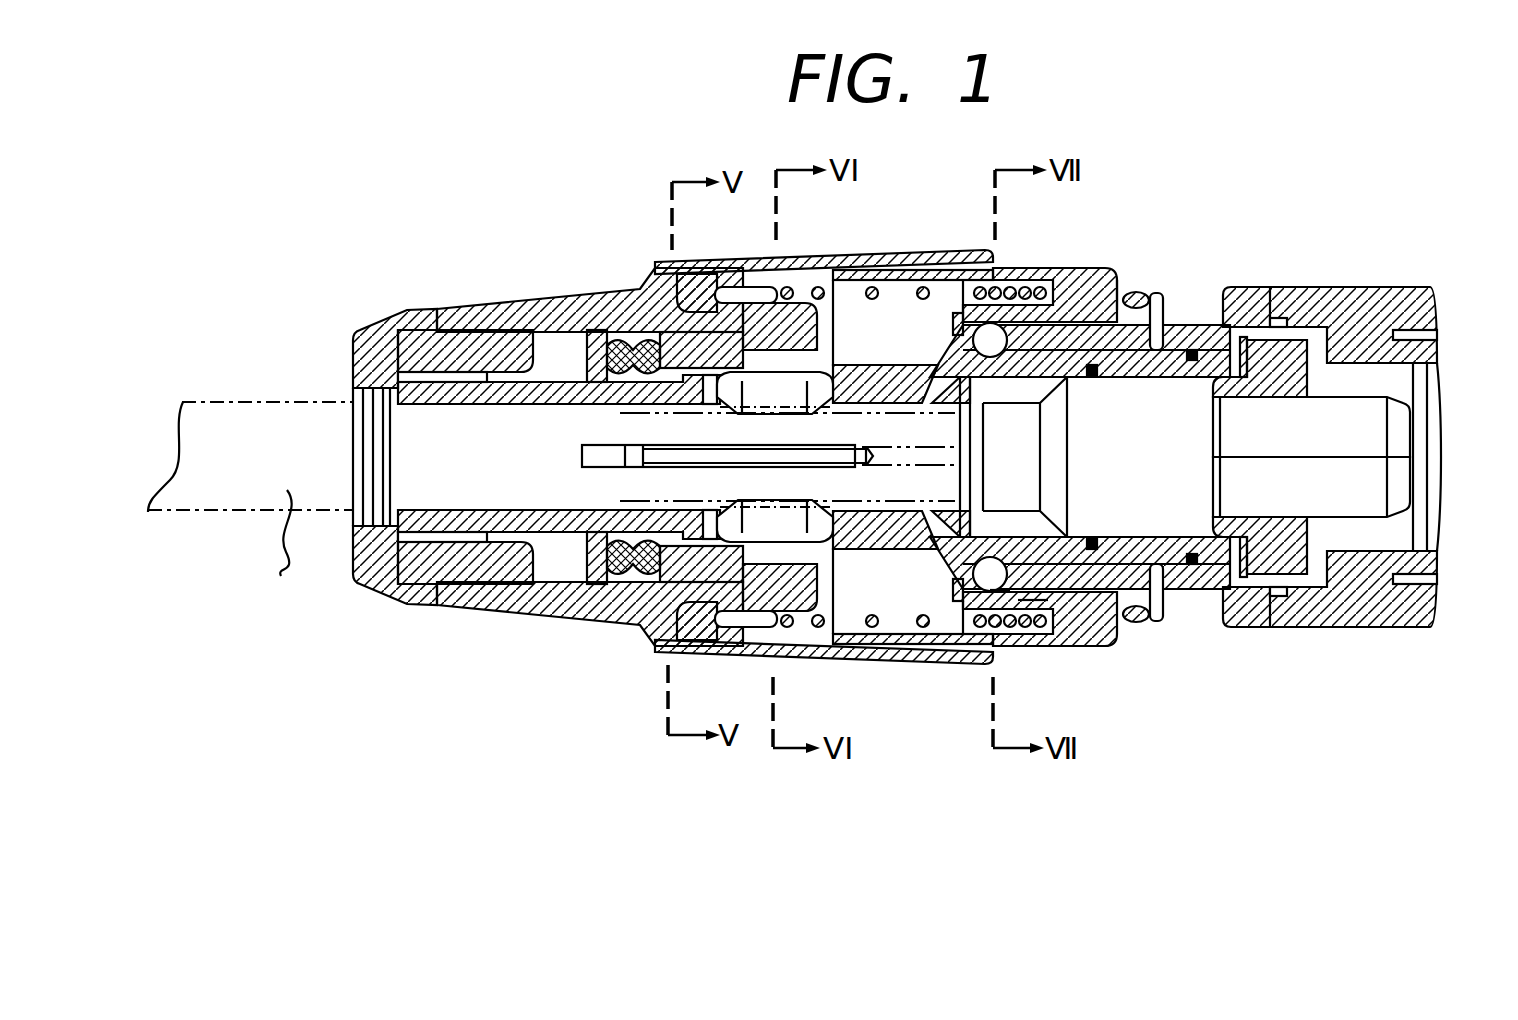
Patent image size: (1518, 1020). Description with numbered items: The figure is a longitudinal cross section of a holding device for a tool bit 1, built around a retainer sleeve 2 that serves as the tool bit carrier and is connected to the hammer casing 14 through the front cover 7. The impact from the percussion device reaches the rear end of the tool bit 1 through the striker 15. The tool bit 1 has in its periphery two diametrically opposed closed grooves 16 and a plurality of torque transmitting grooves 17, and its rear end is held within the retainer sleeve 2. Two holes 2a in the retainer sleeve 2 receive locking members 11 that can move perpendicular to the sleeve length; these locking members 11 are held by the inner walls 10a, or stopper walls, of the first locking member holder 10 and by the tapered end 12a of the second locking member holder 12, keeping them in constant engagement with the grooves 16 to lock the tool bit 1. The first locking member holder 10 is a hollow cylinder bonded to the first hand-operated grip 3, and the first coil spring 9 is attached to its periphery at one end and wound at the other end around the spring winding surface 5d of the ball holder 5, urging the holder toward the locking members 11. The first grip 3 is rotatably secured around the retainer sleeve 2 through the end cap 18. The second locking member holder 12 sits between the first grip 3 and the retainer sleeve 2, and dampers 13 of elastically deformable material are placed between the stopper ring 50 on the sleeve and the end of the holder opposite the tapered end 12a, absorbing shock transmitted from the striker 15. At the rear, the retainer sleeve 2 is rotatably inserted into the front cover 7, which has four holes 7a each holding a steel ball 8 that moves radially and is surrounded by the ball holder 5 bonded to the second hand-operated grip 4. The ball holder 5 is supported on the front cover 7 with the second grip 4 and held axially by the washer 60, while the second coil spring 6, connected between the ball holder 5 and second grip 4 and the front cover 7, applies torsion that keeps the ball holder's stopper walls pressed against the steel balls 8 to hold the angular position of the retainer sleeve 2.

The tool bit 1 is at (250, 504).
The retainer sleeve 2 is at (470, 548).
The holes 2a is at (710, 527).
The first hand-operated grip 3 is at (545, 612).
The second hand-operated grip 4 is at (1115, 283).
The ball holder 5 is at (1085, 265).
The spring winding surface 5d is at (1027, 612).
The second coil spring 6 is at (1133, 625).
The front cover 7 is at (1250, 618).
The holes 7a is at (1000, 600).
The steel balls 8 is at (1017, 268).
The first coil spring 9 is at (867, 278).
The first locking member holder 10 is at (835, 305).
The inner walls 10a is at (790, 558).
The locking members 11 is at (791, 368).
The second locking member holder 12 is at (748, 332).
The tapered end 12a is at (690, 273).
The dampers 13 is at (627, 332).
The hammer casing 14 is at (1398, 290).
The striker 15 is at (1378, 482).
The closed grooves 16 is at (628, 412).
The torque transmitting grooves 17 is at (627, 460).
The end cap 18 is at (400, 590).
The stopper ring 50 is at (590, 327).
The washer 60 is at (992, 335).